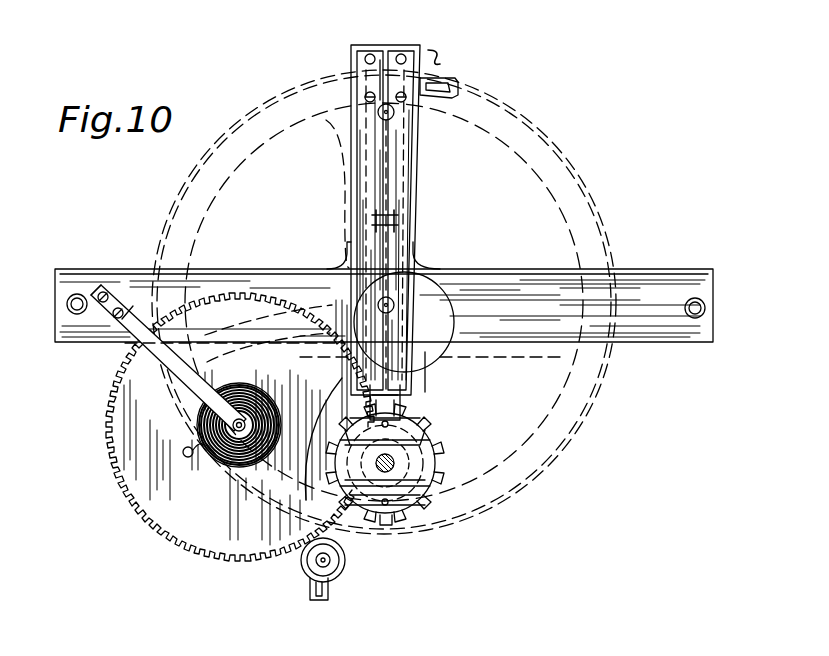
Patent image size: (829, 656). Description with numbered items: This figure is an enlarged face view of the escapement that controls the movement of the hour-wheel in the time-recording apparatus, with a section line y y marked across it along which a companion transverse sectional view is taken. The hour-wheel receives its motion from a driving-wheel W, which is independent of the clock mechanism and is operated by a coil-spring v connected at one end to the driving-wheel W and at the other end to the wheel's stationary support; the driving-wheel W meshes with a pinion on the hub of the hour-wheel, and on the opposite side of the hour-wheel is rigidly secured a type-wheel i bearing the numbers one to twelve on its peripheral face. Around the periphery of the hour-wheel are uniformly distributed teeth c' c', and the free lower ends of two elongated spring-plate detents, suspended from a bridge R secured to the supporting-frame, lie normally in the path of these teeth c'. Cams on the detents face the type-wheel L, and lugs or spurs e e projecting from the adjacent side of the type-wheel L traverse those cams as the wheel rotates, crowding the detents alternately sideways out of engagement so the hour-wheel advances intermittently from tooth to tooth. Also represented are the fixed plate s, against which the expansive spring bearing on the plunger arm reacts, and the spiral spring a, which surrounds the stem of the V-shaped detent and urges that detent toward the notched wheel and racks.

The type-wheel L is at (384, 302).
The bridge R is at (384, 305).
The lugs or spurs e is at (355, 236).
The fixed plate s is at (330, 592).
The driving-wheel W is at (184, 451).
The coil-spring v is at (246, 390).
The section line y is at (345, 340).
The type-wheel i is at (446, 424).
The teeth c' is at (454, 449).
The spiral spring a is at (408, 512).